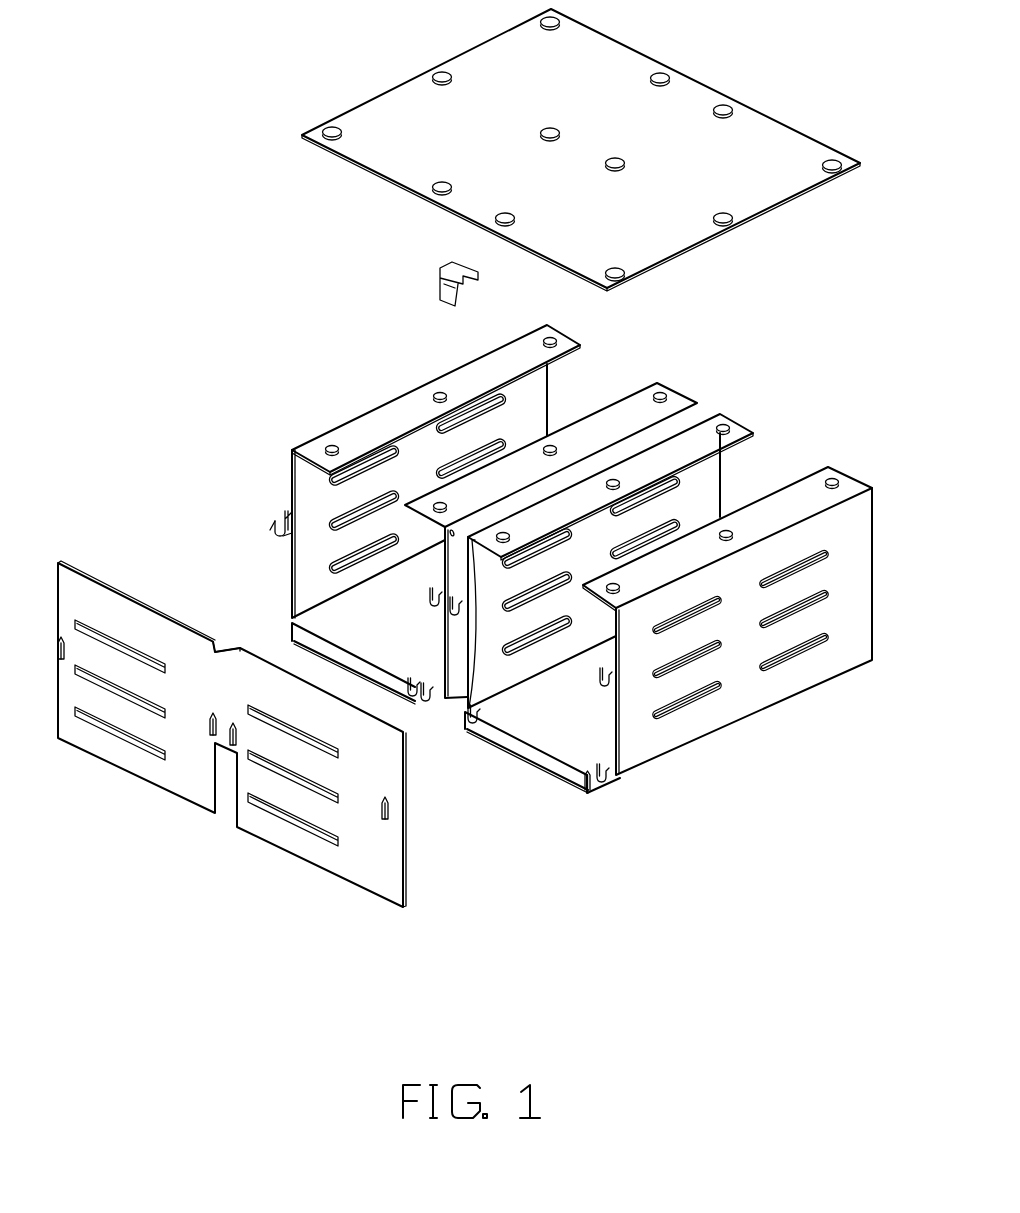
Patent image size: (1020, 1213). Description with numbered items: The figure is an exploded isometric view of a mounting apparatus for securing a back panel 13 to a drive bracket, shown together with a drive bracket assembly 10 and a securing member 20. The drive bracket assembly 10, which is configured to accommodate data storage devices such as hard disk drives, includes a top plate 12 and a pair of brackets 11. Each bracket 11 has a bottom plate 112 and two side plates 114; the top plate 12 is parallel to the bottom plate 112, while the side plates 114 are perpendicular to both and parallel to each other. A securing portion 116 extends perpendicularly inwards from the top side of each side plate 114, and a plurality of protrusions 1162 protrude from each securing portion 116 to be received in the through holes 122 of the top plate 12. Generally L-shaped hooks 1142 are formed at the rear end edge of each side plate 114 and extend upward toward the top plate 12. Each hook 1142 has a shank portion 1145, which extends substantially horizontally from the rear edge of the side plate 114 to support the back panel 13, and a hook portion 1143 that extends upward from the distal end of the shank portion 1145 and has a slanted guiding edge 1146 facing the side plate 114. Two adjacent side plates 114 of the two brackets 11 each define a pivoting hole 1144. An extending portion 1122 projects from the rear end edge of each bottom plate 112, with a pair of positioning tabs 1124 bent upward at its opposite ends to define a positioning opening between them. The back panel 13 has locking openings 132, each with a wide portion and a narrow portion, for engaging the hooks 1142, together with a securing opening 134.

The drive bracket assembly 10 is at (466, 438).
The bracket 11 is at (466, 596).
The top plate 12 is at (581, 157).
The through hole 122 is at (662, 72).
The back panel 13 is at (273, 762).
The locking opening 132 is at (392, 806).
The securing opening 134 is at (228, 643).
The securing member 20 is at (413, 283).
The bottom plate 112 is at (473, 745).
The extending portion 1122 is at (547, 757).
The positioning tab 1124 is at (588, 792).
The side plate 114 is at (728, 599).
The hook 1142 is at (382, 639).
The hook portion 1143 is at (280, 515).
The shank portion 1145 is at (272, 537).
The pivoting hole 1144 is at (468, 710).
The slanted guiding edge 1146 is at (614, 682).
The securing portion 116 is at (728, 498).
The protrusion 1162 is at (824, 477).